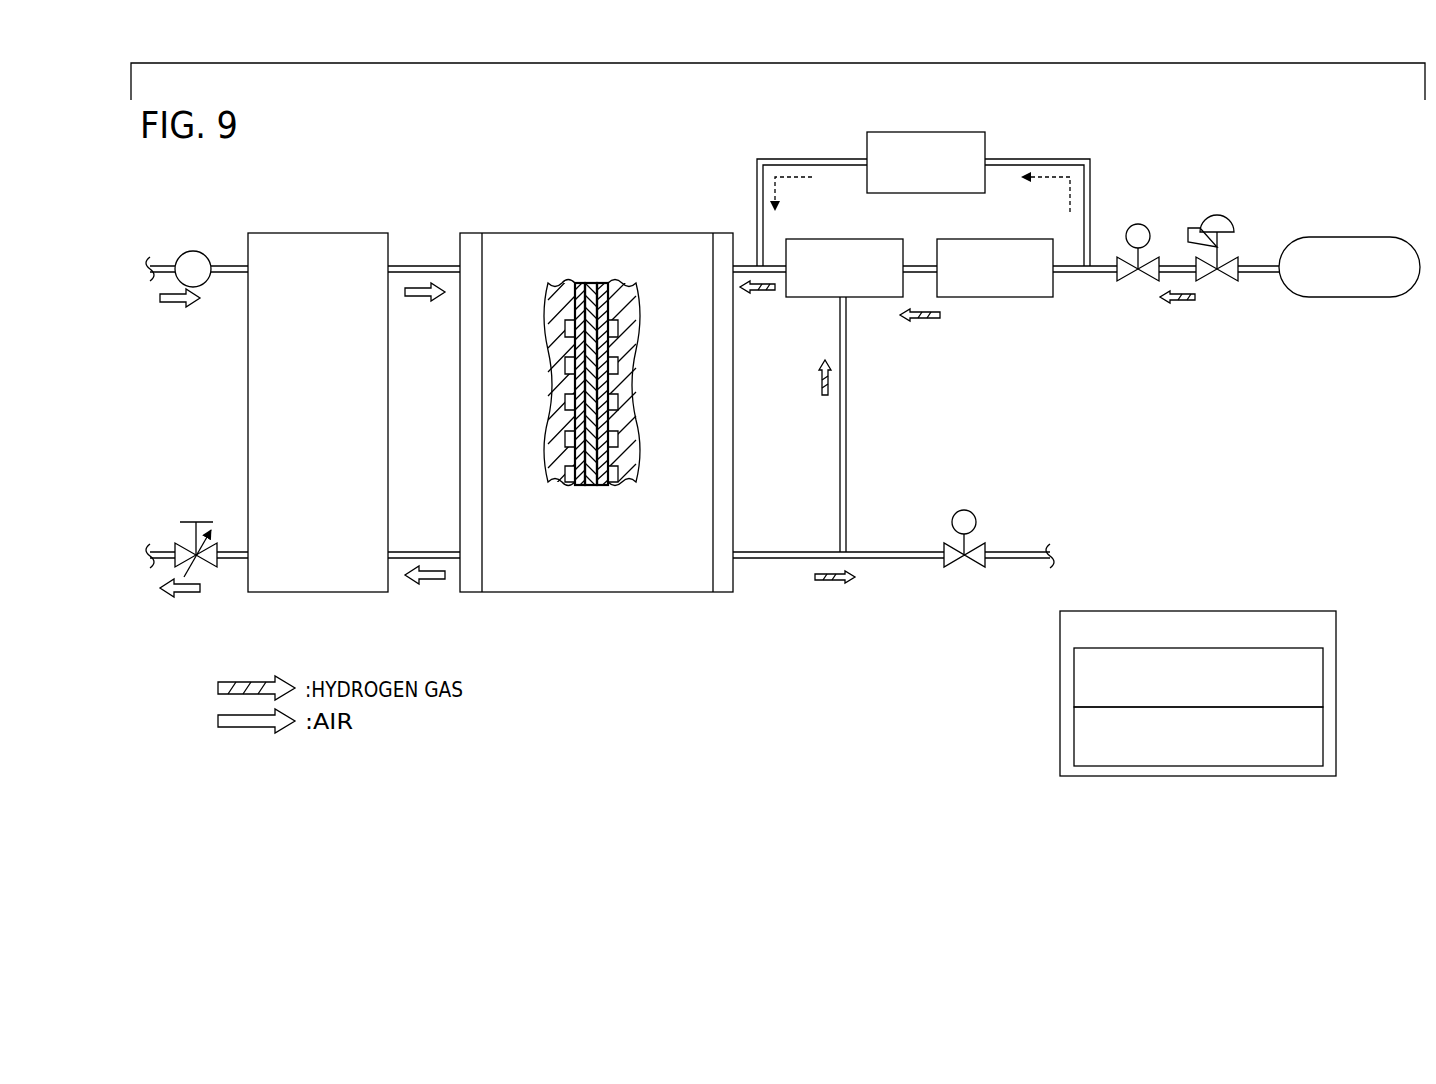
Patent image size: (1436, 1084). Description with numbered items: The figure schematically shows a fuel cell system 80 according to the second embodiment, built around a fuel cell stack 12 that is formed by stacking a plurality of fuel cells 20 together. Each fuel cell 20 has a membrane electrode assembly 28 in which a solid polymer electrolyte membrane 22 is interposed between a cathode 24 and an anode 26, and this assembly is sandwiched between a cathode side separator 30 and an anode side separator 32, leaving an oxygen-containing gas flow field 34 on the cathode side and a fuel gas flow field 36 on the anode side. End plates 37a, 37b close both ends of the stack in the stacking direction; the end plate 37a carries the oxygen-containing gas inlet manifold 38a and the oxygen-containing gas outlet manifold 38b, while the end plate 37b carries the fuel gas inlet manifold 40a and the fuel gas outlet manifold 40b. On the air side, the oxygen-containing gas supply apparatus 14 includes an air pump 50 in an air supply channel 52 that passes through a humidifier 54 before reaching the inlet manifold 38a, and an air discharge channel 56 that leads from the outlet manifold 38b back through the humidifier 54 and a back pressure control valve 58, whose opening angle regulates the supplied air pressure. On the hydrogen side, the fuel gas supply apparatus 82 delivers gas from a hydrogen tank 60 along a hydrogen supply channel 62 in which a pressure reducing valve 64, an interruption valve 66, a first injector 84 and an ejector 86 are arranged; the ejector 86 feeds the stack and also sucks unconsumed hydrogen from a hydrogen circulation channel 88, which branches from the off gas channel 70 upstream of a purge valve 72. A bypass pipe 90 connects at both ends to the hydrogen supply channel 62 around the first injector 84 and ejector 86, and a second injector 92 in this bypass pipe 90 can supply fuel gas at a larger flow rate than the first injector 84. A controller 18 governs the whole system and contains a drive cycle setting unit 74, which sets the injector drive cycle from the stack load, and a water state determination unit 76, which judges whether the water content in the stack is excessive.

The fuel cell stack 12 is at (688, 216).
The oxygen-containing gas supply apparatus 14 is at (238, 228).
The controller 18 is at (1163, 673).
The fuel cell 20 is at (590, 363).
The solid polymer electrolyte membrane 22 is at (590, 484).
The cathode 24 is at (578, 484).
The anode 26 is at (624, 407).
The membrane electrode assembly 28 is at (591, 384).
The cathode side separator 30 is at (556, 282).
The anode side separator 32 is at (628, 282).
The oxygen-containing gas flow field 34 is at (565, 418).
The fuel gas flow field 36 is at (650, 389).
The end plate 37a is at (462, 467).
The end plate 37b is at (733, 467).
The oxygen-containing gas inlet manifold 38a is at (460, 264).
The oxygen-containing gas outlet manifold 38b is at (460, 560).
The fuel gas inlet manifold 40a is at (745, 262).
The fuel gas outlet manifold 40b is at (735, 560).
The air pump 50 is at (193, 251).
The air supply channel 52 is at (223, 279).
The humidifier 54 is at (345, 236).
The air discharge channel 56 is at (417, 552).
The back pressure control valve 58 is at (213, 570).
The hydrogen tank 60 is at (1360, 238).
The hydrogen supply channel 62 is at (1075, 273).
The pressure reducing valve 64 is at (1203, 222).
The interruption valve 66 is at (1128, 224).
The off gas channel 70 is at (772, 552).
The purge valve 72 is at (960, 510).
The drive cycle setting unit 74 is at (1074, 670).
The water state determination unit 76 is at (1074, 733).
The fuel cell system 80 is at (358, 159).
The fuel gas supply apparatus 82 is at (1263, 242).
The first injector 84 is at (1016, 239).
The ejector 86 is at (870, 239).
The hydrogen circulation channel 88 is at (846, 446).
The bypass pipe 90 is at (1042, 159).
The second injector 92 is at (937, 133).